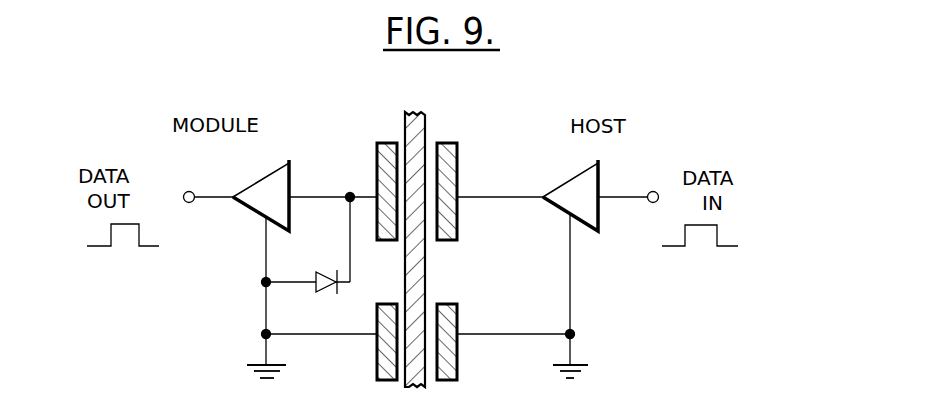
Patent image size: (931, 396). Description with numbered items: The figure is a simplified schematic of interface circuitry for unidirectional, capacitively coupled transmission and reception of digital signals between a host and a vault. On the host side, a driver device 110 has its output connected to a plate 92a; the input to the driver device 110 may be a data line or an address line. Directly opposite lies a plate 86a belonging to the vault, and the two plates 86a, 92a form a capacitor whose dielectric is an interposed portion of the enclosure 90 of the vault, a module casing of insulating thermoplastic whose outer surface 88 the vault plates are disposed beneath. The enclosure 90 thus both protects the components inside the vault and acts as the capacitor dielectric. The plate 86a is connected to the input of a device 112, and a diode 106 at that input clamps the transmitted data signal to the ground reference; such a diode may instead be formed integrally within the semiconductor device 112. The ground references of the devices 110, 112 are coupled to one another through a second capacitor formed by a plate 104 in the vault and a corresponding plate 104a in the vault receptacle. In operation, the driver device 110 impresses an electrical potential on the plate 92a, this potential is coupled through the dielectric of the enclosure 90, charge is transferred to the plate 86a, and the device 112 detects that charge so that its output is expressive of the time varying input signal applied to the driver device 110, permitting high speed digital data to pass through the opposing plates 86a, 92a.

The outer surface 88 is at (448, 228).
The enclosure 90 is at (425, 112).
The plate 86a is at (377, 143).
The plate 92a is at (455, 141).
The plate 104 is at (377, 368).
The plate 104a is at (457, 372).
The diode 106 is at (318, 290).
The driver device 110 is at (563, 186).
The device 112 is at (263, 178).